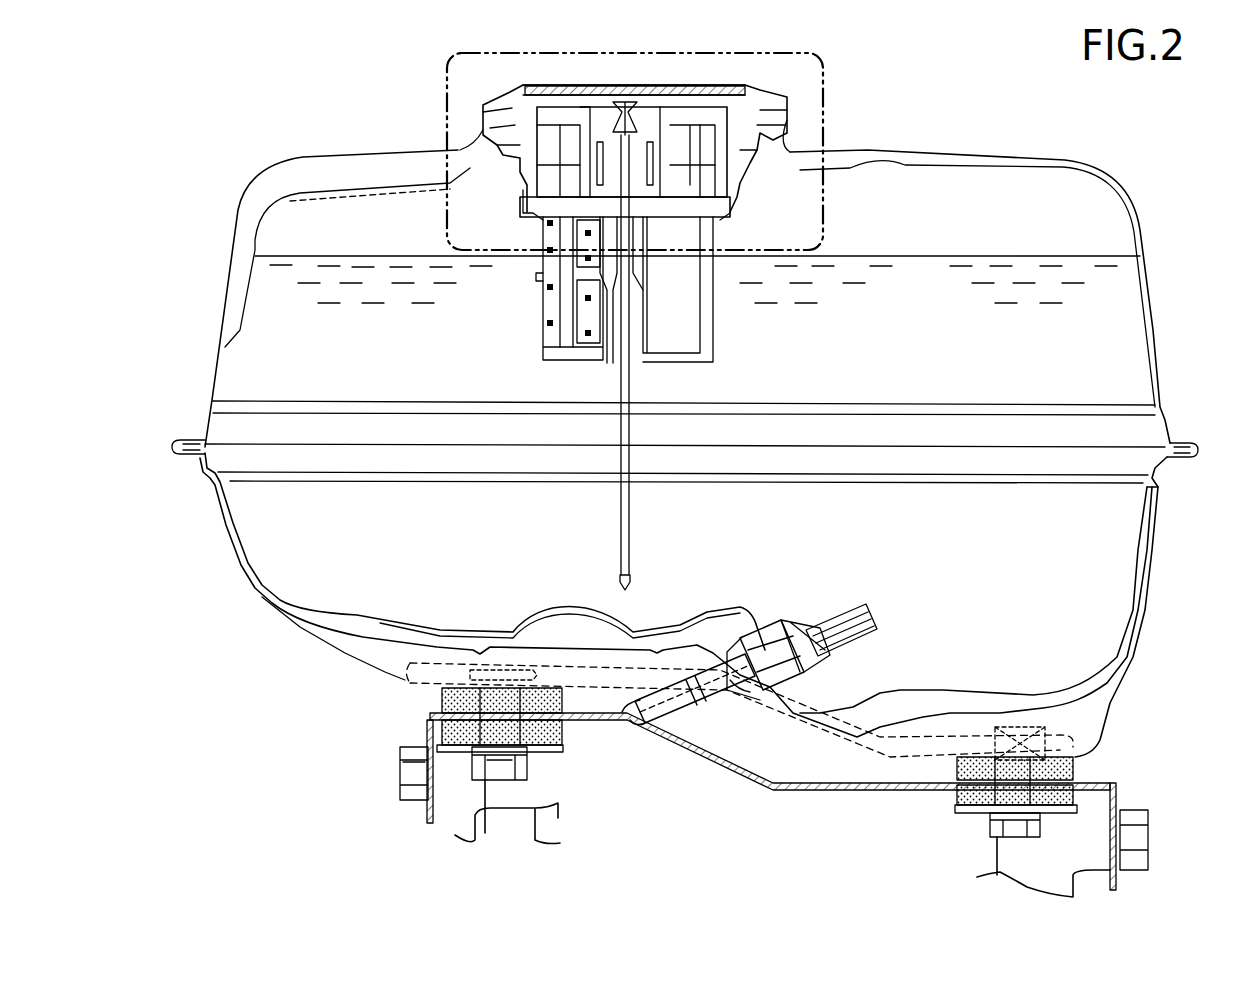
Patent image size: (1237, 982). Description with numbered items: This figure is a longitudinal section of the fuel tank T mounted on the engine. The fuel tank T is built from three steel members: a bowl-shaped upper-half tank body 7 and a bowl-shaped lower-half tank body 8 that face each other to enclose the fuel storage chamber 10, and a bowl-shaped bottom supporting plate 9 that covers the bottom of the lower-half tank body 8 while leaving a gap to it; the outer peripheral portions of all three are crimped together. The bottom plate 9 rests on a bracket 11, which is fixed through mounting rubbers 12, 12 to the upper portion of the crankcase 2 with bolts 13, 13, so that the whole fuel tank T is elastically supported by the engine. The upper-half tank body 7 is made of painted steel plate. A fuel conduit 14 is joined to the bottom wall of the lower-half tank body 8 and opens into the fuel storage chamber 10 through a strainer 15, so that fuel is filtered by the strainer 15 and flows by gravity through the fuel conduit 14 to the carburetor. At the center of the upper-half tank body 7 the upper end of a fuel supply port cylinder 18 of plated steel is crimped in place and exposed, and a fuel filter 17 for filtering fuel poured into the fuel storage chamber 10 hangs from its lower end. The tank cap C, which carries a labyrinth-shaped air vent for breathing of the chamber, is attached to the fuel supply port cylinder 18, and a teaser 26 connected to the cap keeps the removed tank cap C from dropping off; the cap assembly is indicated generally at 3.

The crankcase 2 is at (1093, 817).
The fuel cap assembly 3 is at (716, 201).
The upper-half tank body 7 is at (1113, 192).
The lower-half tank body 8 is at (1133, 577).
The bottom supporting plate 9 is at (1133, 577).
The fuel storage chamber 10 is at (921, 375).
The bracket 11 is at (827, 791).
The mounting rubbers 12 is at (440, 717).
The bolts 13 is at (503, 663).
The fuel conduit 14 is at (677, 710).
The strainer 15 is at (832, 615).
The fuel filter 17 is at (550, 305).
The fuel supply port cylinder 18 is at (730, 192).
The teaser 26 is at (630, 497).
The tank cap C is at (763, 87).
The fuel tank T is at (1155, 307).